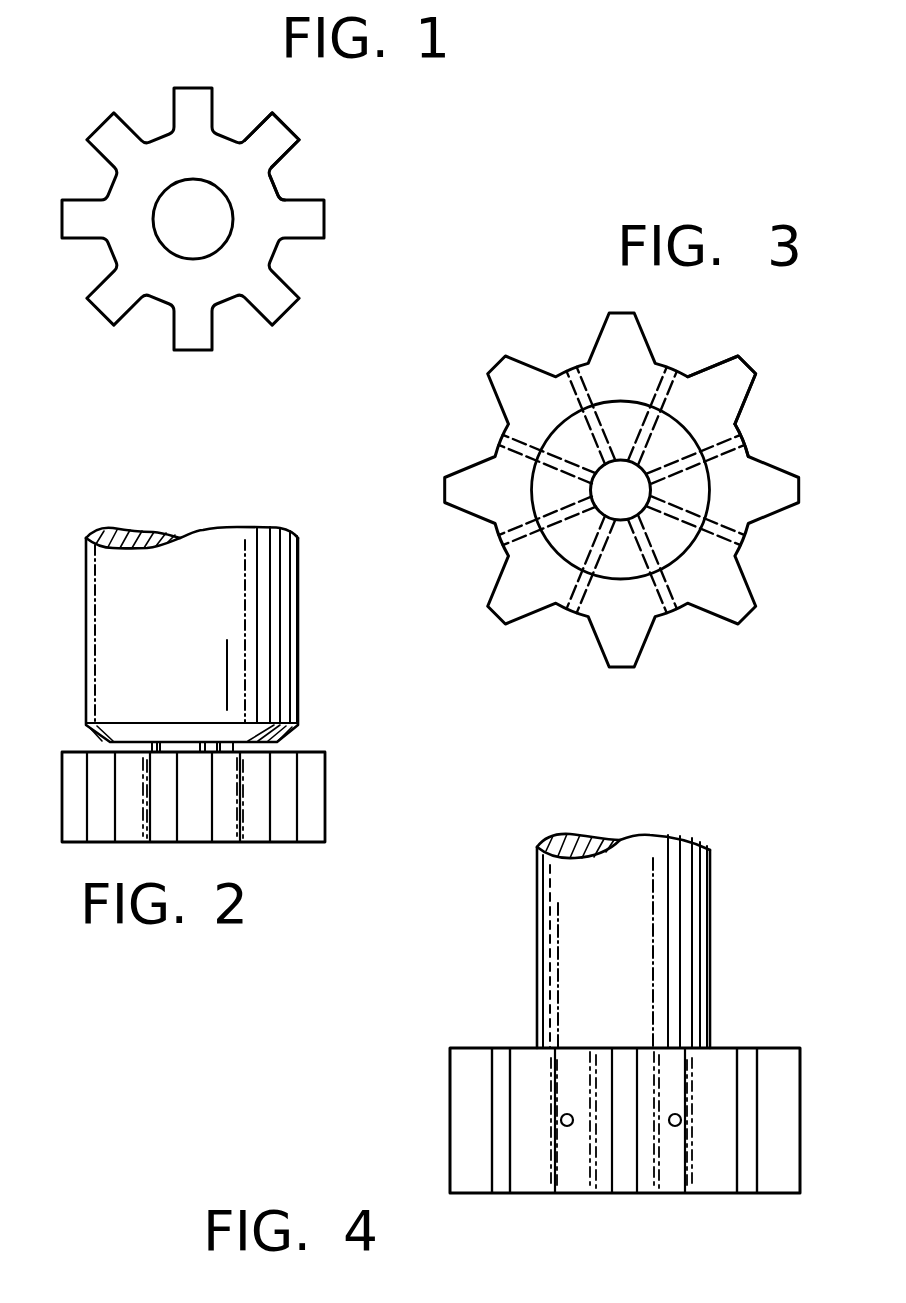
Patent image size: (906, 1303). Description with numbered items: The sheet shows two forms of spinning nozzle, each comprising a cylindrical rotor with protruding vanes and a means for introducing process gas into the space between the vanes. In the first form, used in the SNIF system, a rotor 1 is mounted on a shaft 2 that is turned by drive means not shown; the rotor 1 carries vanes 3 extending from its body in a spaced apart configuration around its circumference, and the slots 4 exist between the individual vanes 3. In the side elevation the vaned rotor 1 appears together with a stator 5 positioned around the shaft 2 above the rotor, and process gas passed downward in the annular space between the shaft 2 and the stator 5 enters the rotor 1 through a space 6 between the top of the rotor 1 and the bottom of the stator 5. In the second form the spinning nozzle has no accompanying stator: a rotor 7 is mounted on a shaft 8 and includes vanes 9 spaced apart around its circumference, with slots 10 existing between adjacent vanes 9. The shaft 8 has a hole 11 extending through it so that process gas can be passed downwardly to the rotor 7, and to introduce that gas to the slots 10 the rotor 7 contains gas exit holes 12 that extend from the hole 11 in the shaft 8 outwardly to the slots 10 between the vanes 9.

In FIG. 1, the rotor 1 is at (175, 353).
In FIG. 2, the rotor 1 is at (62, 817).
In FIG. 1, the shaft 2 is at (233, 227).
In FIG. 1, the vanes 3 is at (290, 128).
In FIG. 1, the slots 4 is at (279, 187).
In FIG. 2, the stator 5 is at (90, 639).
In FIG. 2, the space 6 is at (113, 747).
In FIG. 3, the rotor 7 is at (666, 626).
In FIG. 4, the rotor 7 is at (804, 1100).
In FIG. 3, the shaft 8 is at (687, 377).
In FIG. 4, the shaft 8 is at (712, 950).
In FIG. 3, the vanes 9 is at (743, 363).
In FIG. 4, the vanes 9 is at (498, 1167).
In FIG. 3, the slots 10 is at (750, 427).
In FIG. 3, the hole 11 is at (632, 502).
In FIG. 3, the gas exit holes 12 is at (565, 365).
In FIG. 4, the gas exit holes 12 is at (676, 1126).